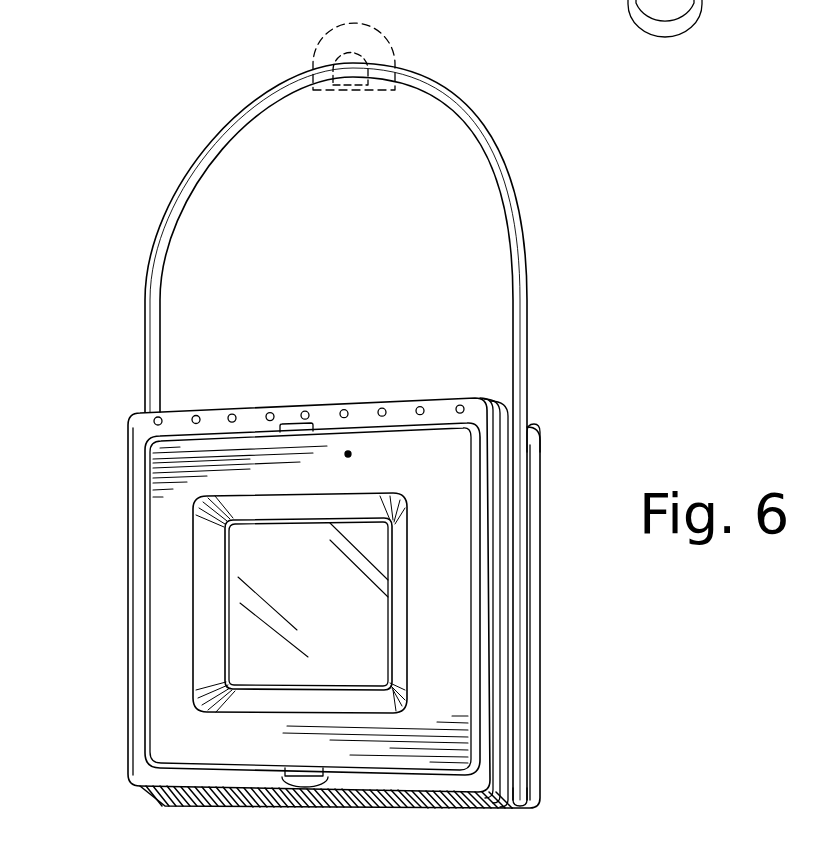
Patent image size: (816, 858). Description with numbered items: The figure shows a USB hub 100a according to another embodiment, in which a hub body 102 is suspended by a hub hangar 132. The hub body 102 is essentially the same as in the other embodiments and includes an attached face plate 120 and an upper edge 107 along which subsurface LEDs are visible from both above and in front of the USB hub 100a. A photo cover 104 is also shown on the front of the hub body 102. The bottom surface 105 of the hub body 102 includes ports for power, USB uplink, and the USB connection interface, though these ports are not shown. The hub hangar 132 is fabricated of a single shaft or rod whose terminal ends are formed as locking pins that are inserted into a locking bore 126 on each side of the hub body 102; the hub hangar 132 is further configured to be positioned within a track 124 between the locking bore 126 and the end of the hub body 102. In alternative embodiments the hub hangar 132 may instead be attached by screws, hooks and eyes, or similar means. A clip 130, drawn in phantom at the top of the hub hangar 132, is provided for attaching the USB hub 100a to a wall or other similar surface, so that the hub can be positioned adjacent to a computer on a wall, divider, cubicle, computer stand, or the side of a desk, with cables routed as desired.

The USB hub 100a is at (210, 78).
The clip 130 is at (397, 42).
The hub hangar 132 is at (148, 282).
The upper edge 107 is at (187, 410).
The track 124 is at (534, 445).
The face plate 120 is at (351, 455).
The hub body 102 is at (140, 603).
The photo cover 104 is at (328, 611).
The locking bore 126 is at (557, 603).
The bottom surface 105 is at (130, 806).